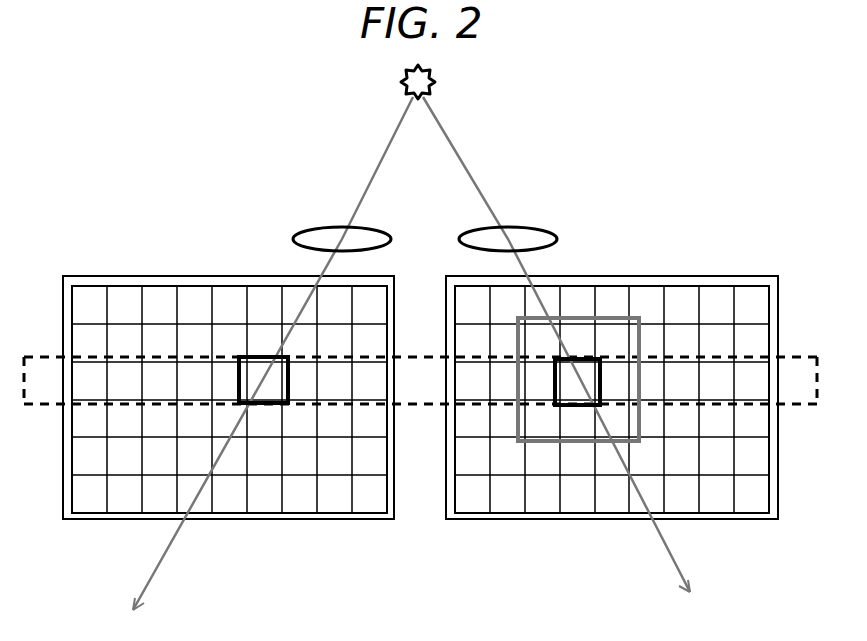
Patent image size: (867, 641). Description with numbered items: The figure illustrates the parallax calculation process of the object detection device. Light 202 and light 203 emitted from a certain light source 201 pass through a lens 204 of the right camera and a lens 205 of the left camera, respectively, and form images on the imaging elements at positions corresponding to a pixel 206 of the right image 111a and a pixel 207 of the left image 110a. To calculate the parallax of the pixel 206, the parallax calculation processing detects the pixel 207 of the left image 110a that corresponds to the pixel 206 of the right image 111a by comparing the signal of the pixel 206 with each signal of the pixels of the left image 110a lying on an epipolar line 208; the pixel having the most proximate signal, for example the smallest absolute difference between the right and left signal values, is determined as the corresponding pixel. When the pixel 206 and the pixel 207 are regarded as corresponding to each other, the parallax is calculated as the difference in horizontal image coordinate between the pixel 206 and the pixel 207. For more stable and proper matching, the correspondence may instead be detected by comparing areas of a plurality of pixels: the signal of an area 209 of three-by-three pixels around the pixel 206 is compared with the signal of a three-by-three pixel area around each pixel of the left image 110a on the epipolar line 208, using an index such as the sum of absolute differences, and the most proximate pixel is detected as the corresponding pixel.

The left image 110a is at (113, 277).
The right image 111a is at (695, 277).
The light source 201 is at (432, 76).
The light 202 is at (442, 118).
The light 203 is at (398, 126).
The lens of the right camera 204 is at (463, 230).
The lens of the left camera 205 is at (365, 228).
The pixel of the right image 206 is at (587, 357).
The pixel of the left image 207 is at (255, 356).
The epipolar line 208 is at (42, 357).
The area 209 is at (535, 318).